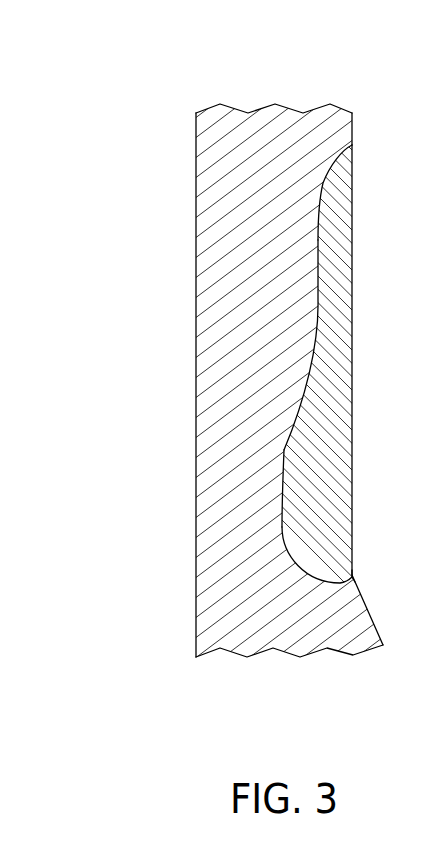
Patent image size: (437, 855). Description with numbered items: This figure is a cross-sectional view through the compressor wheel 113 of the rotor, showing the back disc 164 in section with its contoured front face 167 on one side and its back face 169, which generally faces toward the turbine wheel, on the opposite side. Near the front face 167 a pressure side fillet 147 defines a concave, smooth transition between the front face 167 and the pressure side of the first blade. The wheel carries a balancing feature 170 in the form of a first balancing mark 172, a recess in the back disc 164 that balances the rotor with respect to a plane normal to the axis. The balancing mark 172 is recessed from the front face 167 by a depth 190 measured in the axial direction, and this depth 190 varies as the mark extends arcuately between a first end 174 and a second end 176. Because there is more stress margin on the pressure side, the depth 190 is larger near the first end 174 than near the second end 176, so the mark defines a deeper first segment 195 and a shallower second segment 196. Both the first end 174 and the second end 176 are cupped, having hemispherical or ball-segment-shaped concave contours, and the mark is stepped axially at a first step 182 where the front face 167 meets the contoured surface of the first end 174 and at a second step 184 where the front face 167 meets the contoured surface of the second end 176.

The compressor wheel 113 is at (163, 88).
The pressure side fillet 147 is at (375, 623).
The back disc 164 is at (202, 163).
The front face 167 is at (353, 116).
The back face 169 is at (197, 542).
The balancing feature 170 is at (375, 235).
The first balancing mark 172 is at (338, 310).
The first end 174 is at (327, 577).
The second end 176 is at (339, 151).
The first step 182 is at (352, 585).
The second step 184 is at (353, 146).
The depth 190 is at (383, 412).
The first segment 195 is at (280, 510).
The second segment 196 is at (320, 279).